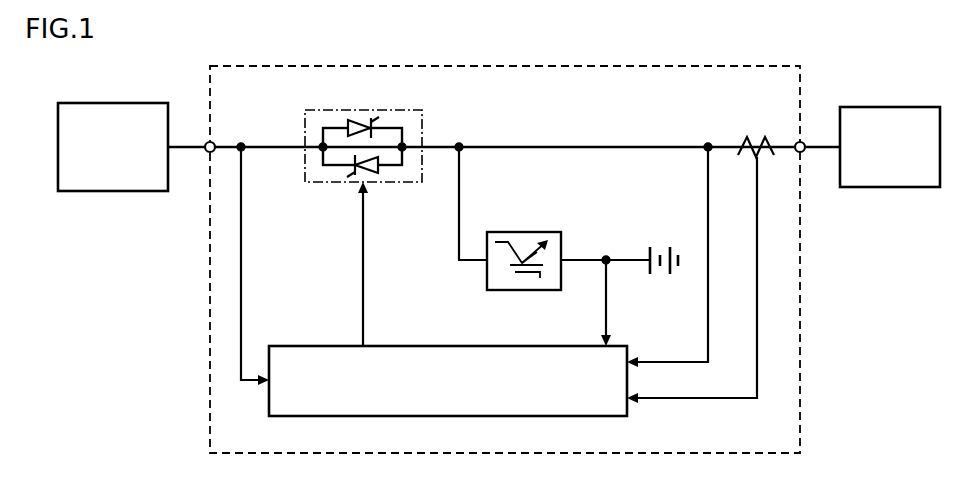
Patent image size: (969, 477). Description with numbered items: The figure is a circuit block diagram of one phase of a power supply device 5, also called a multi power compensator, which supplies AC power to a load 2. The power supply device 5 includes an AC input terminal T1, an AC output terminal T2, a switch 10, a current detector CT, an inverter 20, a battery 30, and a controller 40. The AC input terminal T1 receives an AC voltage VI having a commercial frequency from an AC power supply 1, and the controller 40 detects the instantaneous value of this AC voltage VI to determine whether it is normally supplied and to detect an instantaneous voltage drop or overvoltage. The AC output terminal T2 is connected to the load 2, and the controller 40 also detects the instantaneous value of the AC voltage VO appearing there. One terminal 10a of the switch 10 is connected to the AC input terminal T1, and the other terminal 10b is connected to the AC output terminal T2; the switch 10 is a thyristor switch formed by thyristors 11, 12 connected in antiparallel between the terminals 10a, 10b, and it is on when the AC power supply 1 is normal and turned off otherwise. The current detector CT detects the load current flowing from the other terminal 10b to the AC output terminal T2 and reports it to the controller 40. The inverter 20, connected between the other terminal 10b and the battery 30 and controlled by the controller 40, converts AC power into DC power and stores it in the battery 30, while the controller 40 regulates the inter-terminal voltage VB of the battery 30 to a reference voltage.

The AC power supply 1 is at (127, 103).
The load 2 is at (902, 107).
The power supply device 5 is at (757, 66).
The switch 10 is at (370, 110).
The one terminal of switch 10a is at (307, 150).
The other terminal of switch 10b is at (405, 150).
The thyristor 11 is at (350, 130).
The thyristor 12 is at (378, 170).
The inverter 20 is at (522, 232).
The battery 30 is at (664, 278).
The controller 40 is at (590, 416).
The AC input terminal T1 is at (205, 151).
The AC output terminal T2 is at (805, 151).
The AC voltage VI is at (241, 141).
The AC voltage VO is at (708, 141).
The inter-terminal voltage VB is at (606, 254).
The current detector CT is at (761, 140).